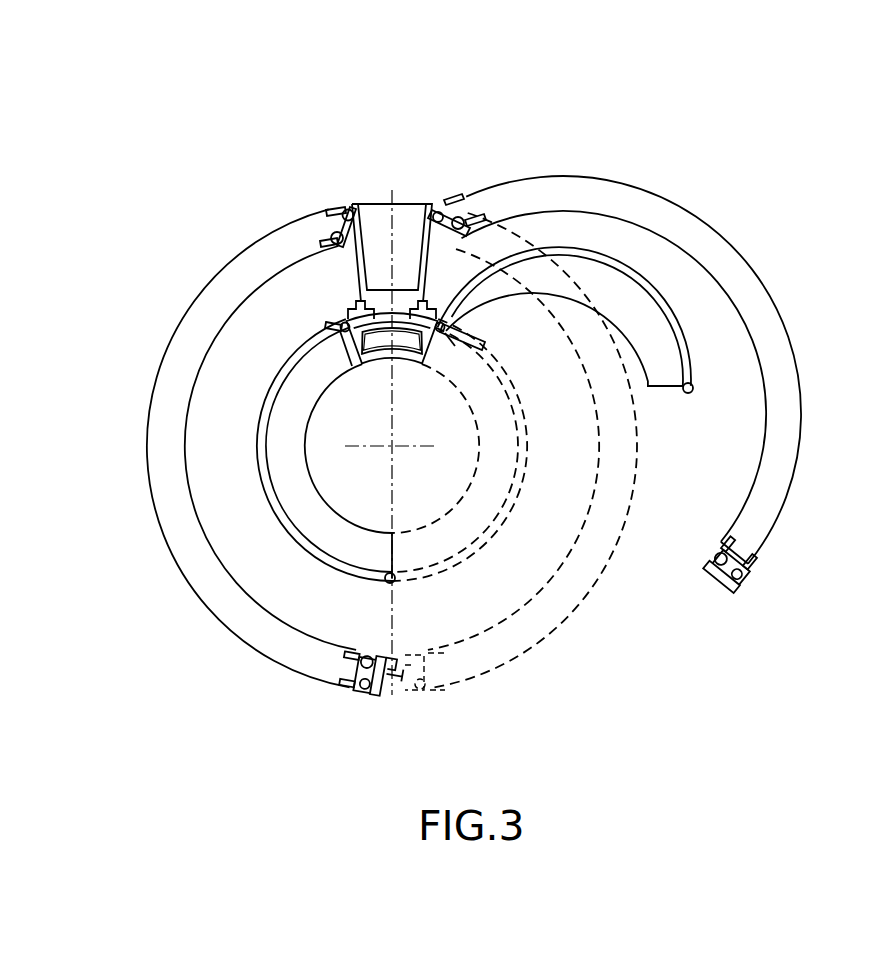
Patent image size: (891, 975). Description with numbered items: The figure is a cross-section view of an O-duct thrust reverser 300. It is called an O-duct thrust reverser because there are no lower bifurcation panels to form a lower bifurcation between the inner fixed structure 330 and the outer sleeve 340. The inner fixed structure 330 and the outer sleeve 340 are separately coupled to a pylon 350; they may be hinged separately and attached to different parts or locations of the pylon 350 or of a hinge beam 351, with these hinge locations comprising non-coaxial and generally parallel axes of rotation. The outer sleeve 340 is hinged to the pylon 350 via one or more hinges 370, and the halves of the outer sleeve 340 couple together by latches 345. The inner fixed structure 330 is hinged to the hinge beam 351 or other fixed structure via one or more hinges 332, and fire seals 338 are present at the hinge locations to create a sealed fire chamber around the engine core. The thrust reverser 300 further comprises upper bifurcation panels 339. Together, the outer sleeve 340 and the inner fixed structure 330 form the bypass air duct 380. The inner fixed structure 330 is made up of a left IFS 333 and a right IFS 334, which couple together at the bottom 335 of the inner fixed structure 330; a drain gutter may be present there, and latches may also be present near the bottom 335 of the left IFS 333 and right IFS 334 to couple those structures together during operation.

The O-duct thrust reverser 300 is at (630, 124).
The inner fixed structure 330 is at (650, 282).
The hinge 332 is at (343, 325).
The left IFS 333 is at (268, 424).
The right IFS 334 is at (666, 388).
The bottom of the IFS 335 is at (398, 578).
The fire seal 338 is at (351, 364).
The upper bifurcation panel 339 is at (330, 268).
The outer sleeve 340 is at (178, 512).
The latch 345 is at (373, 692).
The pylon 350 is at (385, 205).
The hinge beam 351 is at (405, 364).
The hinge 370 is at (343, 210).
The bypass air duct 380 is at (220, 344).